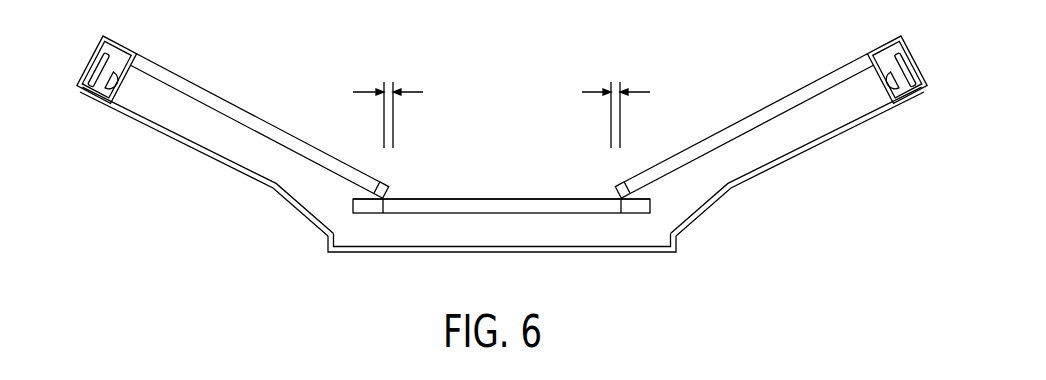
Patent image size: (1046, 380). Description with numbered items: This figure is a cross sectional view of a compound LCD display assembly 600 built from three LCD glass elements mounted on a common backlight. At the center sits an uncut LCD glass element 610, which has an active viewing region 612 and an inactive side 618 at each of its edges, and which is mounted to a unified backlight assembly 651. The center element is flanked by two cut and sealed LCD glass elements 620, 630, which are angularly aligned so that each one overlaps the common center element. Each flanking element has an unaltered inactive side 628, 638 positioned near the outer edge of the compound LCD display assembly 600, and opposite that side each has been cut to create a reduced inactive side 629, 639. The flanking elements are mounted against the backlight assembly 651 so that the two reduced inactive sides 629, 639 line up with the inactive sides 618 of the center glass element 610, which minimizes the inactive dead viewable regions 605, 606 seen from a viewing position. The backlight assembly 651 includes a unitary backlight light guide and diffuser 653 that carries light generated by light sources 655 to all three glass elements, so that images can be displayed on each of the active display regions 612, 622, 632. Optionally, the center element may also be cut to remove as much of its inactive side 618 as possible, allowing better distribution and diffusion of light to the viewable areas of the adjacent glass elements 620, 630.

The compound LCD display assembly 600 is at (340, 55).
The inactive dead viewable region 605 is at (413, 88).
The inactive dead viewable region 606 is at (597, 90).
The uncut LCD glass element 610 is at (502, 198).
The active viewing region 612 is at (452, 207).
The inactive side 618 is at (375, 207).
The cut and sealed LCD glass element 620 is at (801, 93).
The active display region 622 is at (748, 124).
The unaltered inactive side 628 is at (897, 69).
The reduced inactive side 629 is at (622, 190).
The cut and sealed LCD glass element 630 is at (280, 131).
The active display region 632 is at (255, 124).
The unaltered inactive side 638 is at (107, 69).
The reduced inactive side 639 is at (381, 190).
The unified backlight assembly 651 is at (502, 233).
The unitary backlight light guide and diffuser 653 is at (687, 193).
The light source 655 is at (124, 84).